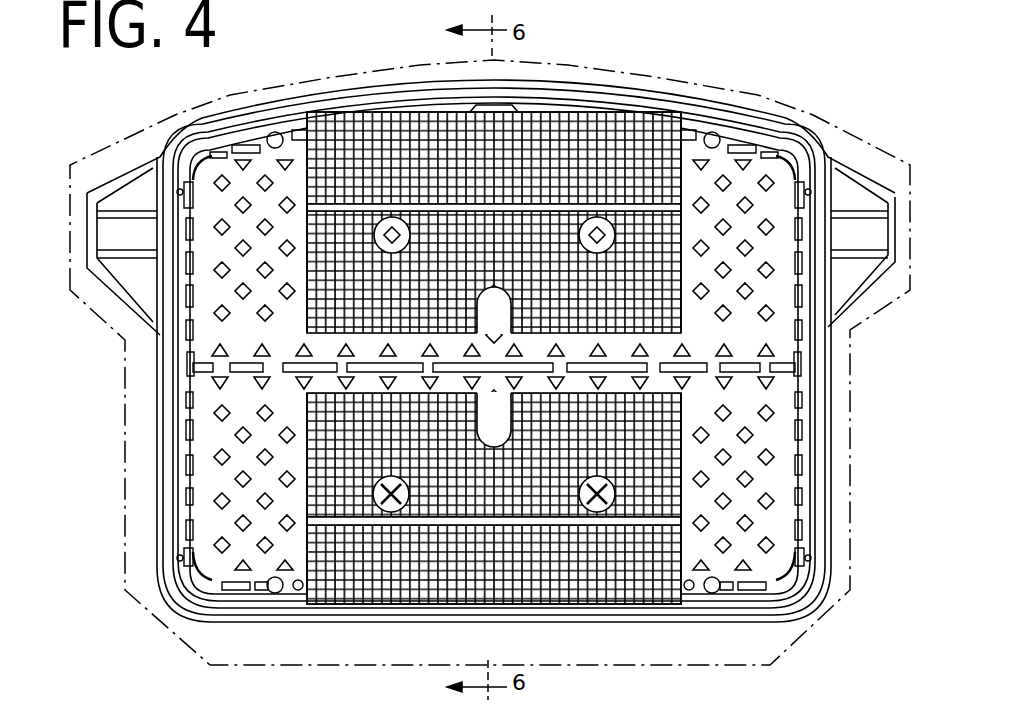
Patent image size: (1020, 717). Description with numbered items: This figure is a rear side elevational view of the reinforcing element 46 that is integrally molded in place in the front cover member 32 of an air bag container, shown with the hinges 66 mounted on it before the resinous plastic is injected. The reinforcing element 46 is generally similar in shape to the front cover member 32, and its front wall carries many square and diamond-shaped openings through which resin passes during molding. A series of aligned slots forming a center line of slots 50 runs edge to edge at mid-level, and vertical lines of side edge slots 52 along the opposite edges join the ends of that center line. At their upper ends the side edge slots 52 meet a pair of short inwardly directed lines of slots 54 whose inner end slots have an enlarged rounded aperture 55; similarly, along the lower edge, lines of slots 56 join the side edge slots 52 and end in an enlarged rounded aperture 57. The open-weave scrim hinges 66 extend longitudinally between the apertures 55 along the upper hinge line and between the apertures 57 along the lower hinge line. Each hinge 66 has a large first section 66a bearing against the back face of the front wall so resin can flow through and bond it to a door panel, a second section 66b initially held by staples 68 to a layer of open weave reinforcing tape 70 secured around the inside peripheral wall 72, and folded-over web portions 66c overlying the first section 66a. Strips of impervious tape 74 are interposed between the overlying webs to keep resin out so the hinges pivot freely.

The front cover member 32 is at (668, 660).
The reinforcing element 46 is at (320, 628).
The center line of slots 50 is at (225, 373).
The side edge slots 52 is at (173, 488).
The upper edge lines of slots 54 is at (232, 146).
The enlarged rounded aperture 55 is at (275, 132).
The lower edge lines of slots 56 is at (247, 590).
The enlarged rounded aperture 57 is at (278, 592).
The hinge 66 is at (494, 364).
The first hinge section 66a is at (638, 307).
The second hinge section 66b is at (592, 112).
The folded-over web portion 66c is at (506, 170).
The staples 68 is at (187, 367).
The reinforcing tape 70 is at (363, 112).
The peripheral wall 72 is at (170, 542).
The impervious tape strips 74 is at (513, 211).